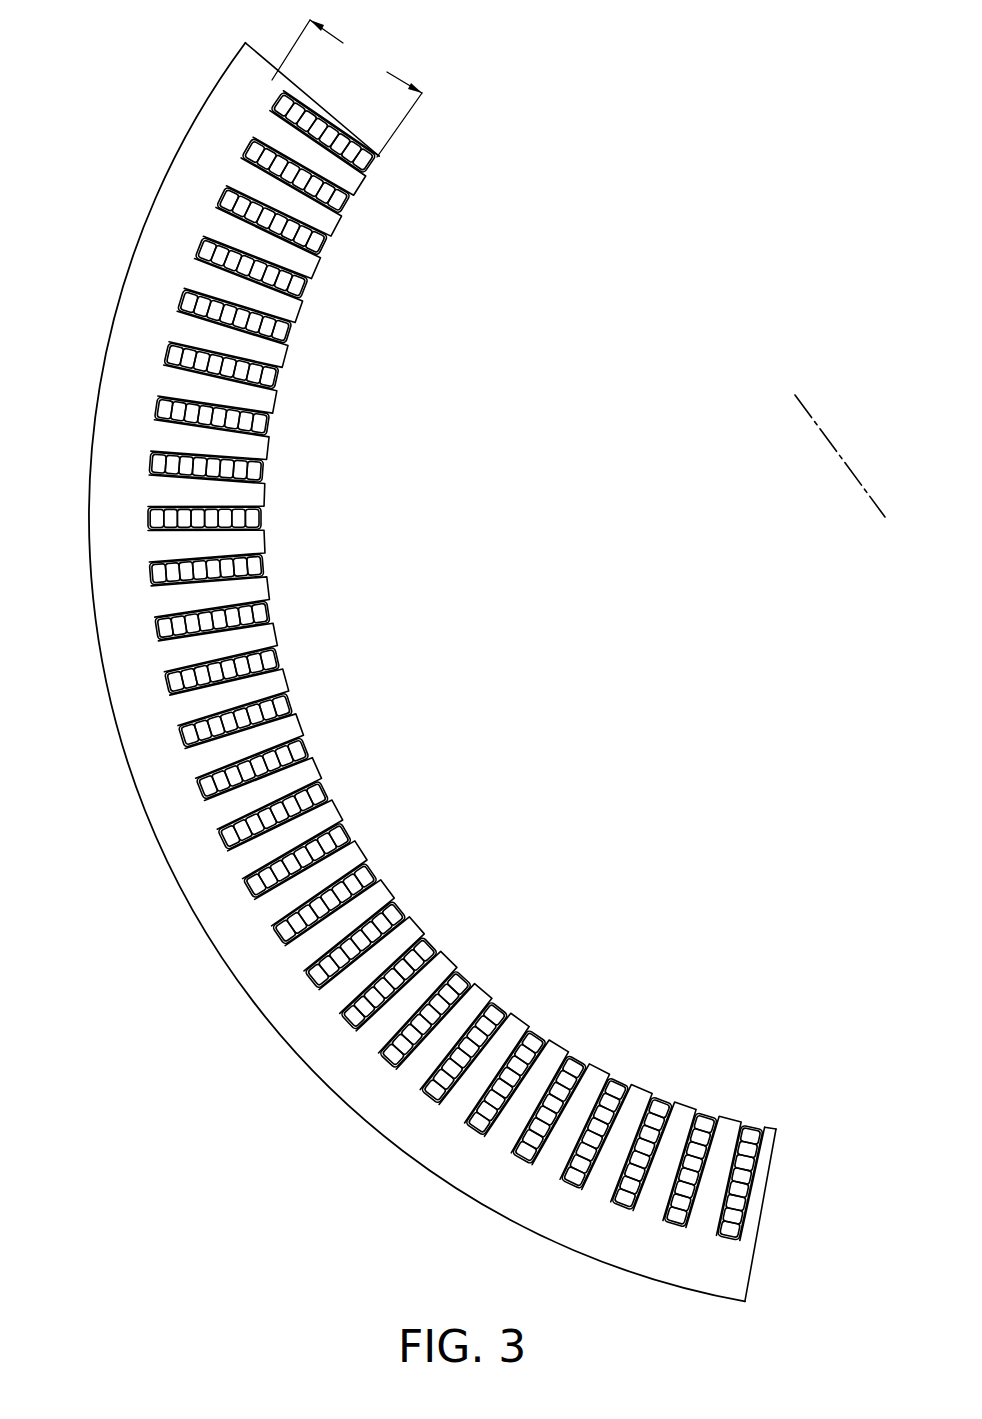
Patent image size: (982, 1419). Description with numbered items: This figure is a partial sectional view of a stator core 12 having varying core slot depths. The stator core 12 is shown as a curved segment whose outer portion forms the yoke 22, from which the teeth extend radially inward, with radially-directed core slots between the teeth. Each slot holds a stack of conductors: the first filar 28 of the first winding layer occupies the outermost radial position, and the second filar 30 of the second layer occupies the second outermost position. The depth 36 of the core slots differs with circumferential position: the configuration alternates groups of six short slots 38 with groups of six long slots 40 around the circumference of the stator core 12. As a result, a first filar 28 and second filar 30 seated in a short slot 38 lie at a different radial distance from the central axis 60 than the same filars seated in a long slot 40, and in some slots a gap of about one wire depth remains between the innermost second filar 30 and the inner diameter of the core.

The stator core 12 is at (148, 150).
The yoke 22 is at (100, 425).
The first filar 28 is at (206, 251).
The second filar 30 is at (204, 262).
The depth 36 is at (347, 88).
The short slots 38 is at (311, 293).
The long slots 40 is at (259, 564).
The central axis 60 is at (843, 460).